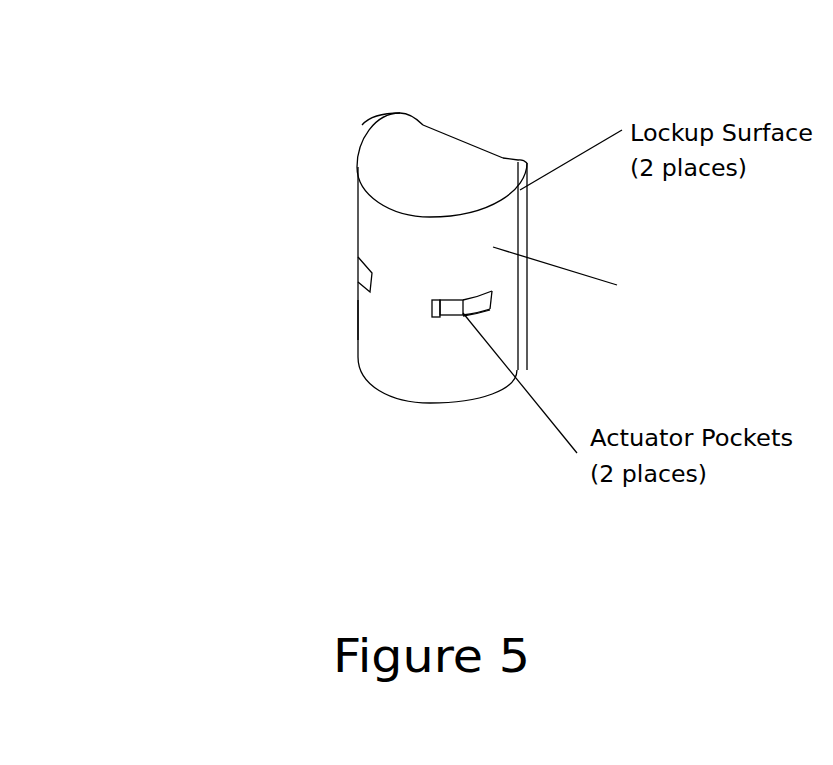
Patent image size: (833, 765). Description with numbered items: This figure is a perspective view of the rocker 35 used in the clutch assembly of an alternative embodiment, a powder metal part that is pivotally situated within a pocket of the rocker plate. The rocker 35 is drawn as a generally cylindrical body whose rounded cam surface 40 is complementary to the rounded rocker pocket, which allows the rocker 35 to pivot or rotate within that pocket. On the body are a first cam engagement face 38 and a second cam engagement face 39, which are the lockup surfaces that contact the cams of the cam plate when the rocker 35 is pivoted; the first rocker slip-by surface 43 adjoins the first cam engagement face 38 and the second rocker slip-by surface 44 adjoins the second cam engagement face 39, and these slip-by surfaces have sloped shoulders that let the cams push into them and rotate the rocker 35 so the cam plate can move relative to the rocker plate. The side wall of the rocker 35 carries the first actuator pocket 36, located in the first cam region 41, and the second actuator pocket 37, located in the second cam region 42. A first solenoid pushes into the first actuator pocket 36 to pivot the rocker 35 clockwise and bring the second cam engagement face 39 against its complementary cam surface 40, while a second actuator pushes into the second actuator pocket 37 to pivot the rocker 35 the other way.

The rocker 35 is at (250, 112).
The first actuator pocket 36 is at (470, 303).
The second actuator pocket 37 is at (363, 277).
The first cam engagement face 38 is at (527, 237).
The second cam engagement face 39 is at (402, 113).
The cam surface 40 is at (633, 273).
The first cam region 41 is at (498, 328).
The second cam region 42 is at (370, 312).
The first rocker slip-by surface 43 is at (503, 158).
The second rocker slip-by surface 44 is at (423, 127).